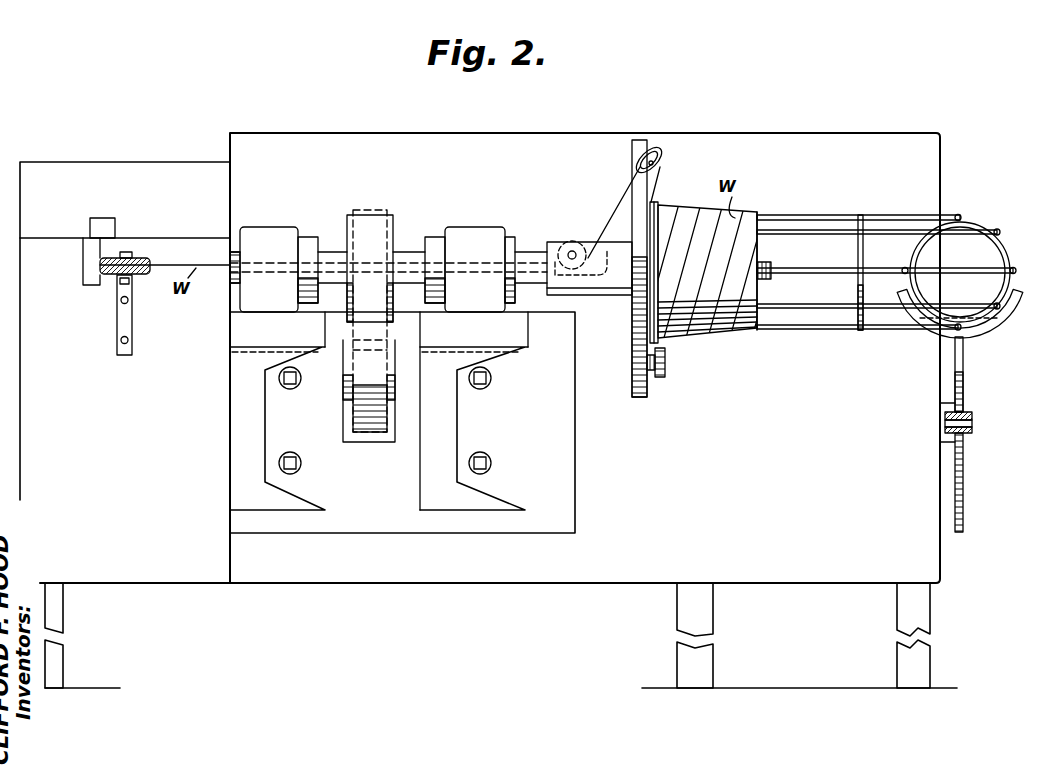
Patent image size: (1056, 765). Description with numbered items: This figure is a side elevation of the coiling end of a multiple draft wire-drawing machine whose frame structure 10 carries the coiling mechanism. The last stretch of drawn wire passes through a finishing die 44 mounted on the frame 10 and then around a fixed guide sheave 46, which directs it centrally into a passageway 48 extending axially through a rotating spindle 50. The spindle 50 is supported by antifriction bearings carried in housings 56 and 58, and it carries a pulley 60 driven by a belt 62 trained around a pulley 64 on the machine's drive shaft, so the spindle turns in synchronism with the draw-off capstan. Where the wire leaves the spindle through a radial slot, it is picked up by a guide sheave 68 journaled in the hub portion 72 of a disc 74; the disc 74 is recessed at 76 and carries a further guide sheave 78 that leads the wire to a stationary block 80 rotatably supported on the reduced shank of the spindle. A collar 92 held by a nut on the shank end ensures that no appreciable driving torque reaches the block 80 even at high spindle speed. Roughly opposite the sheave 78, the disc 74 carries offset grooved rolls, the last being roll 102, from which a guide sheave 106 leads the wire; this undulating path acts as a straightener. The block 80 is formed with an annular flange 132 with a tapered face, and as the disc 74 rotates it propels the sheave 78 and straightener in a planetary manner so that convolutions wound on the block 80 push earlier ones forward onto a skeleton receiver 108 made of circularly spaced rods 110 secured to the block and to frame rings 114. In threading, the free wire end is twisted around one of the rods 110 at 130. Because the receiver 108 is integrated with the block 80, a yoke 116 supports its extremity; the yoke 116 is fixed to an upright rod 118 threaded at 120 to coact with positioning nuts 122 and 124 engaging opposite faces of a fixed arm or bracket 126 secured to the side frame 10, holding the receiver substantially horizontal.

The frame structure 10 is at (470, 570).
The finishing die 44 is at (98, 265).
The fixed guide sheave 46 is at (117, 290).
The passageway 48 is at (270, 275).
The rotating spindle 50 is at (406, 252).
The housing 56 is at (262, 226).
The housing 58 is at (470, 226).
The pulley 60 is at (346, 224).
The belt 62 is at (364, 209).
The pulley 64 is at (345, 353).
The guide sheave 68 is at (566, 240).
The hub portion 72 is at (610, 296).
The disc 74 is at (631, 355).
The recess 76 is at (632, 150).
The guide sheave 78 is at (658, 152).
The stationary block 80 is at (708, 325).
The collar 92 is at (770, 265).
The grooved roll 102 is at (658, 378).
The guide sheave 106 is at (666, 362).
The receiver 108 is at (790, 213).
The rods 110 is at (840, 228).
The frame rings 114 is at (900, 236).
The yoke 116 is at (975, 335).
The upright rod 118 is at (966, 384).
The threaded portion 120 is at (963, 500).
The positioning nut 122 is at (972, 414).
The positioning nut 124 is at (966, 432).
The fixed arm or bracket 126 is at (972, 423).
The temporary wire fastening point 130 is at (772, 278).
The annular flange 132 is at (658, 210).